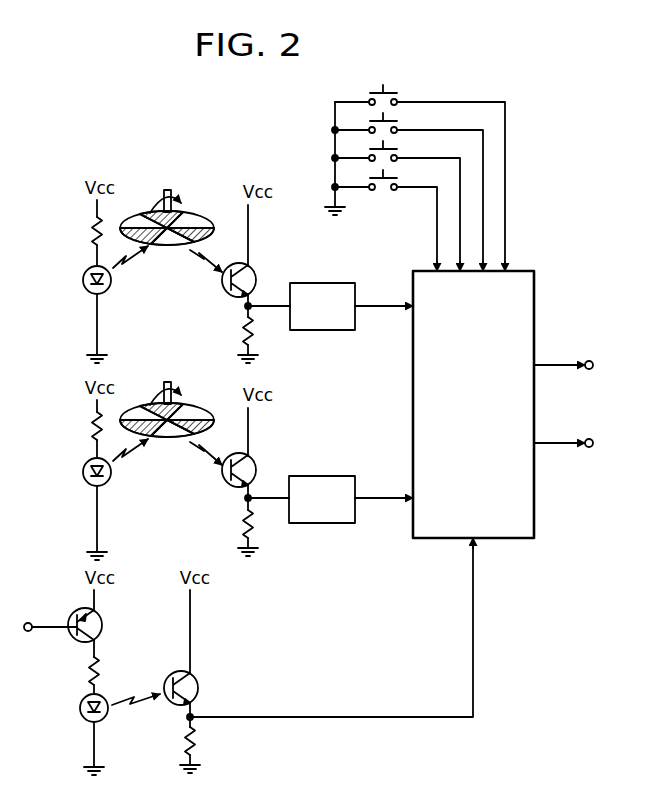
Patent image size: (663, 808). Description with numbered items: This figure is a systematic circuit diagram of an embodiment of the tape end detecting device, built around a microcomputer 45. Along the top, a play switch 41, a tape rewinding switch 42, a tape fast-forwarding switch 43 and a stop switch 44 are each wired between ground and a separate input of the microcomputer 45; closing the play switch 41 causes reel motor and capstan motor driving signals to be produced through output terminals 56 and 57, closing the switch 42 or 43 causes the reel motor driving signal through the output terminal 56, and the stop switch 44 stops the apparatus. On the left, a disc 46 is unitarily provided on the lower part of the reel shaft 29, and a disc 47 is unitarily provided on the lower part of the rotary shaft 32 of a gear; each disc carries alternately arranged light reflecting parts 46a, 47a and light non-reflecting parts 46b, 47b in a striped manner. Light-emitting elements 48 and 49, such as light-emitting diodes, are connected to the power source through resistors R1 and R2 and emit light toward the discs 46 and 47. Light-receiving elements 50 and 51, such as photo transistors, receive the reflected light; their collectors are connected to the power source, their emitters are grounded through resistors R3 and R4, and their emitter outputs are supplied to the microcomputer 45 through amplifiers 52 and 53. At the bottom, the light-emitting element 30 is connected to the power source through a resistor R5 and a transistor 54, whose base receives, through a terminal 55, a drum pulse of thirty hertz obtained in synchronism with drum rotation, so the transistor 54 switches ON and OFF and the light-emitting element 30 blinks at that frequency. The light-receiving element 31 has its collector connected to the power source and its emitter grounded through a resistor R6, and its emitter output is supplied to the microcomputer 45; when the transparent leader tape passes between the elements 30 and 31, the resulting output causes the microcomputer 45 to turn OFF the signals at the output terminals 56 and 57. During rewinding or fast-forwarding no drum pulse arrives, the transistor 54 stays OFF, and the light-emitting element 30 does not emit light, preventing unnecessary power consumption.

The reel shaft 29 is at (163, 206).
The light-emitting element 30 is at (80, 706).
The light-receiving element 31 is at (199, 685).
The rotary shaft 32 is at (163, 398).
The play switch 41 is at (393, 92).
The tape rewinding switch 42 is at (400, 121).
The tape fast-forwarding switch 43 is at (400, 149).
The stop switch 44 is at (402, 178).
The microcomputer 45 is at (537, 313).
The disc 46 is at (158, 246).
The light reflecting parts 46a is at (183, 220).
The light non-reflecting parts 46b is at (173, 250).
The disc 47 is at (158, 438).
The light reflecting parts 47a is at (173, 442).
The light non-reflecting parts 47b is at (181, 405).
The light-emitting element 48 is at (82, 289).
The light-emitting element 49 is at (73, 472).
The light-receiving element 50 is at (252, 276).
The light-receiving element 51 is at (252, 466).
The amplifier 52 is at (322, 283).
The amplifier 53 is at (322, 476).
The transistor 54 is at (103, 625).
The terminal 55 is at (27, 622).
The output terminal 56 is at (589, 361).
The output terminal 57 is at (589, 447).
The resistor R1 is at (83, 233).
The resistor R2 is at (82, 427).
The resistor R3 is at (234, 331).
The resistor R4 is at (233, 524).
The resistor R5 is at (78, 671).
The resistor R6 is at (203, 742).